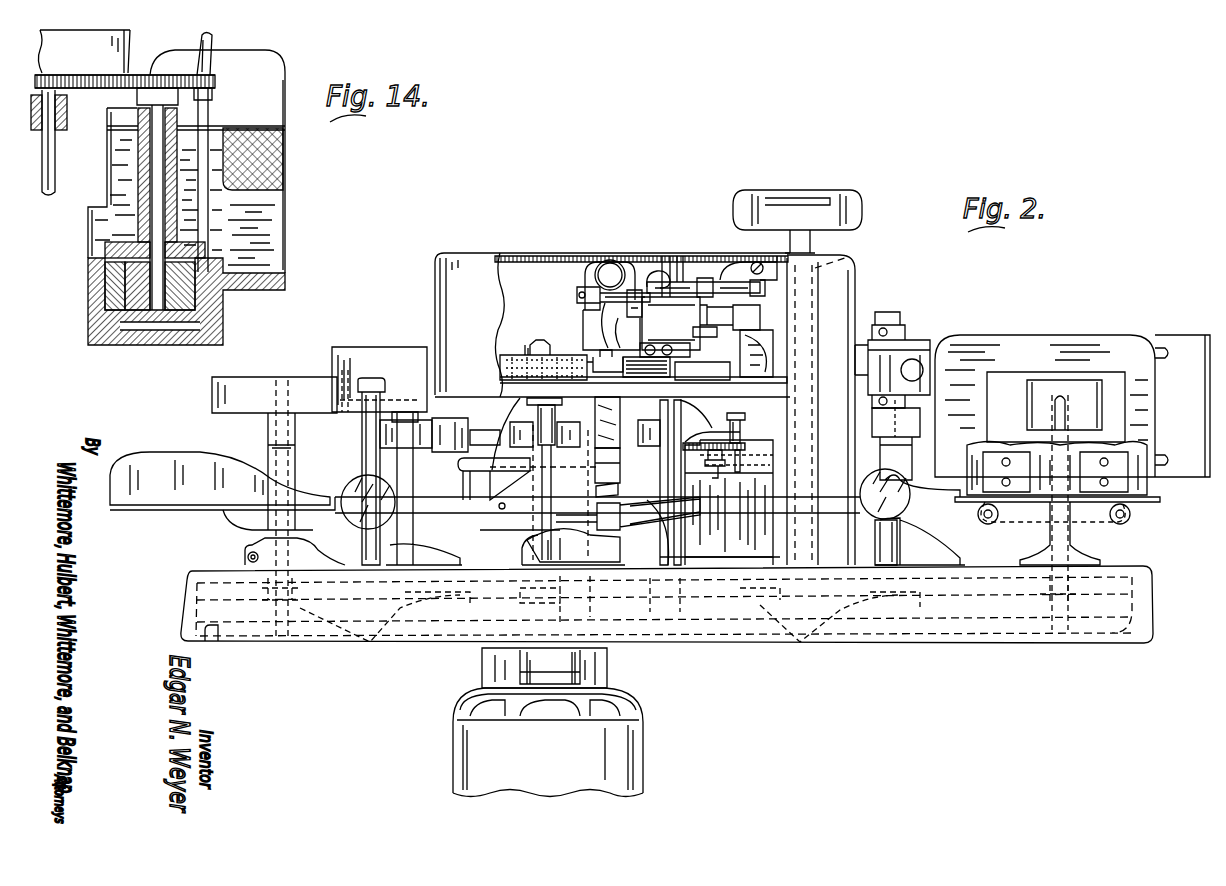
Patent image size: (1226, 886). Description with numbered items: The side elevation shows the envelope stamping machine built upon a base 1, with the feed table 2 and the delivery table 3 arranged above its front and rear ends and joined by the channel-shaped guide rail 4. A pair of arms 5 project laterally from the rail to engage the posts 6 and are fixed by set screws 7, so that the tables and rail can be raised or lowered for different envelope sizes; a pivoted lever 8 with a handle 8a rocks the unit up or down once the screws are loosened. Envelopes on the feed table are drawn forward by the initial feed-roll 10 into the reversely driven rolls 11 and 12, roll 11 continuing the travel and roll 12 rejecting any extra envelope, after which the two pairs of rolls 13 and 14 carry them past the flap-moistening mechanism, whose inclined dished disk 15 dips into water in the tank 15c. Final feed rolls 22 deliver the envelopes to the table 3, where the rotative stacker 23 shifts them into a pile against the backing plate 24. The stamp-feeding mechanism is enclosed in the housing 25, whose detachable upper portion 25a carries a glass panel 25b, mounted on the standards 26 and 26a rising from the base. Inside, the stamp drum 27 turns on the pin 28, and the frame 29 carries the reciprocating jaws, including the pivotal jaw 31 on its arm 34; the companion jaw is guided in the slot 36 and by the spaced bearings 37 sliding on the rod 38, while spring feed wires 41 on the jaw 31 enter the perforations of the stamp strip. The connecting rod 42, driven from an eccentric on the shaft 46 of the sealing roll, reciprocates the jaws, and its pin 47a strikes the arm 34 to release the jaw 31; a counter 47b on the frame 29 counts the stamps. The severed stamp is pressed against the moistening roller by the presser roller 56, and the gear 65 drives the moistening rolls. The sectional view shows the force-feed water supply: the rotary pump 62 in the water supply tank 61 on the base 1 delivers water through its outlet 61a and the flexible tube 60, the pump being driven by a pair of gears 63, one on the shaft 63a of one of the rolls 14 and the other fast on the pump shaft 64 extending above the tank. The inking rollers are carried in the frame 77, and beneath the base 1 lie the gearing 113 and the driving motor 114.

In FIG. 2, the base 1 is at (1128, 596).
In FIG. 2, the feed table 2 is at (170, 510).
In FIG. 2, the delivery table 3 is at (1150, 505).
In FIG. 2, the channel-shaped guide rail 4 is at (432, 505).
In FIG. 2, the arms 5 is at (332, 505).
In FIG. 2, the posts 6 is at (382, 402).
In FIG. 2, the set screws 7 is at (392, 502).
In FIG. 2, the lever 8 is at (628, 513).
In FIG. 2, the handle 8a is at (552, 547).
In FIG. 2, the initial feed-roll 10 is at (255, 385).
In FIG. 2, the roll 11 is at (445, 430).
In FIG. 2, the roll 12 is at (410, 428).
In FIG. 2, the rolls 13 is at (572, 430).
In FIG. 14, the rolls 14 is at (128, 36).
In FIG. 2, the rolls 14 is at (656, 428).
In FIG. 2, the inclined dished disk 15 is at (520, 430).
In FIG. 2, the tank 15c is at (488, 468).
In FIG. 2, the final feed rolls 22 is at (896, 440).
In FIG. 2, the rotative stacker 23 is at (1055, 375).
In FIG. 2, the backing plate 24 is at (990, 442).
In FIG. 2, the housing 25 is at (562, 270).
In FIG. 2, the detachable upper portion 25a is at (472, 260).
In FIG. 2, the glass panel 25b is at (528, 256).
In FIG. 2, the standard 26 is at (536, 479).
In FIG. 2, the standard 26a is at (622, 492).
In FIG. 2, the stamp reel or drum 27 is at (512, 353).
In FIG. 2, the pin 28 is at (540, 340).
In FIG. 2, the frame or standard 29 is at (586, 330).
In FIG. 2, the jaw 31 is at (606, 376).
In FIG. 2, the arm 34 is at (701, 323).
In FIG. 2, the slot 36 is at (685, 361).
In FIG. 2, the bearings 37 is at (634, 288).
In FIG. 2, the rod 38 is at (580, 296).
In FIG. 2, the spring feed wires 41 is at (640, 378).
In FIG. 2, the connecting rod 42 is at (700, 280).
In FIG. 2, the shaft 46 is at (843, 262).
In FIG. 2, the pin 47a is at (665, 256).
In FIG. 2, the counter 47b is at (618, 260).
In FIG. 2, the presser roller 56 is at (775, 360).
In FIG. 14, the flexible tube 60 is at (213, 40).
In FIG. 2, the flexible tube 60 is at (748, 428).
In FIG. 14, the water supply tank 61 is at (285, 205).
In FIG. 2, the water supply tank 61 is at (768, 478).
In FIG. 14, the outlet 61a is at (211, 108).
In FIG. 14, the rotary pump 62 is at (110, 286).
In FIG. 14, the gears 63 is at (135, 84).
In FIG. 2, the gears 63 is at (688, 443).
In FIG. 14, the shaft 63a is at (55, 148).
In FIG. 14, the pump shaft 64 is at (152, 162).
In FIG. 2, the gear 65 is at (725, 455).
In FIG. 2, the frame 77 is at (920, 342).
In FIG. 2, the gearing 113 is at (600, 632).
In FIG. 2, the motor 114 is at (600, 750).